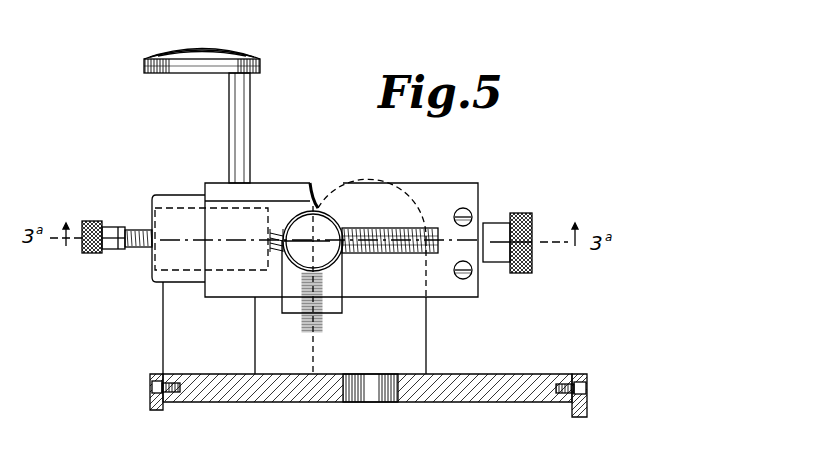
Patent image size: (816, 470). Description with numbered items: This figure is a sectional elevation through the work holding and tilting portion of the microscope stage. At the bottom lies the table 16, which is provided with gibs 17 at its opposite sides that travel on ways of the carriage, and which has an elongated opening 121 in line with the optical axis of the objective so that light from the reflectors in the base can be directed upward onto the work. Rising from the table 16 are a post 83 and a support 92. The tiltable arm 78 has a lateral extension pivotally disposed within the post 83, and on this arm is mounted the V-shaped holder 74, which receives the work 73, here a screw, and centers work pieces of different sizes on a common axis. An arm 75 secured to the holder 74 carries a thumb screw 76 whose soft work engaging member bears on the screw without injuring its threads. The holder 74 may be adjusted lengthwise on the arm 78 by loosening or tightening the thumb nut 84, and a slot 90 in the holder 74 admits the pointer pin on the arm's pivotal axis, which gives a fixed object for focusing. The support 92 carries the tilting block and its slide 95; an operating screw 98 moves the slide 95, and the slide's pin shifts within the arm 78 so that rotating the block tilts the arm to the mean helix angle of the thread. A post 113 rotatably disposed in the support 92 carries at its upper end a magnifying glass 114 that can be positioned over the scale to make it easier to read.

The magnifying glass 114 is at (226, 52).
The post 113 is at (249, 108).
The V-shaped holder 74 is at (274, 190).
The slide 95 is at (189, 206).
The tiltable arm 78 is at (163, 279).
The operating screw 98 is at (118, 250).
The thumb screw 76 is at (330, 258).
The arm 75 is at (338, 306).
The work 73 is at (423, 228).
The slot 90 is at (388, 232).
The thumb nut 84 is at (518, 273).
The support 92 is at (255, 352).
The post 83 is at (427, 345).
The table 16 is at (283, 396).
The elongated opening 121 is at (428, 431).
The gibs 17 is at (155, 410).